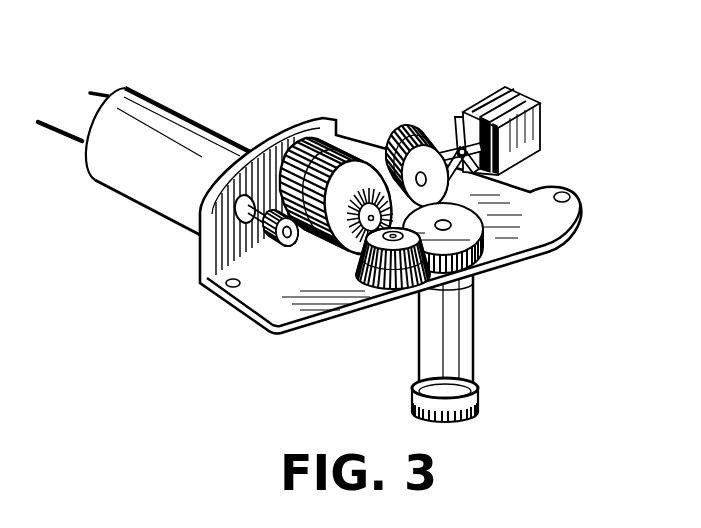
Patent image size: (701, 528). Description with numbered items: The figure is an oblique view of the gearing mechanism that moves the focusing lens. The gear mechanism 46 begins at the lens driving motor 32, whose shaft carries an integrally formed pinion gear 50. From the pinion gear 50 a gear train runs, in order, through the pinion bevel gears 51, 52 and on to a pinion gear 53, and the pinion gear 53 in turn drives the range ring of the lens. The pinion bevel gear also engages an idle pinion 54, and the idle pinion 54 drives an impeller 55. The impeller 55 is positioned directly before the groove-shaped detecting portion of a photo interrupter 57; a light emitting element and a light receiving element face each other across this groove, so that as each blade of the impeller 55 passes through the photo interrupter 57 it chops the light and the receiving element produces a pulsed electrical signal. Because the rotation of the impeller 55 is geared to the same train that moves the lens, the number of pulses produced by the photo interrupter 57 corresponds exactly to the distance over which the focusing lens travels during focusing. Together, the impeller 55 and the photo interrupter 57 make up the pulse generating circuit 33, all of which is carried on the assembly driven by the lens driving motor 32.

The lens driving motor 32 is at (148, 195).
The pulse generating circuit 33 is at (532, 165).
The gear mechanism 46 is at (381, 188).
The pinion gear 50 is at (272, 247).
The pinion bevel gear 51 is at (355, 137).
The pinion bevel gear 52 is at (372, 285).
The pinion gear 53 is at (482, 402).
The idle pinion 54 is at (417, 133).
The impeller 55 is at (459, 120).
The photo interrupter 57 is at (528, 130).